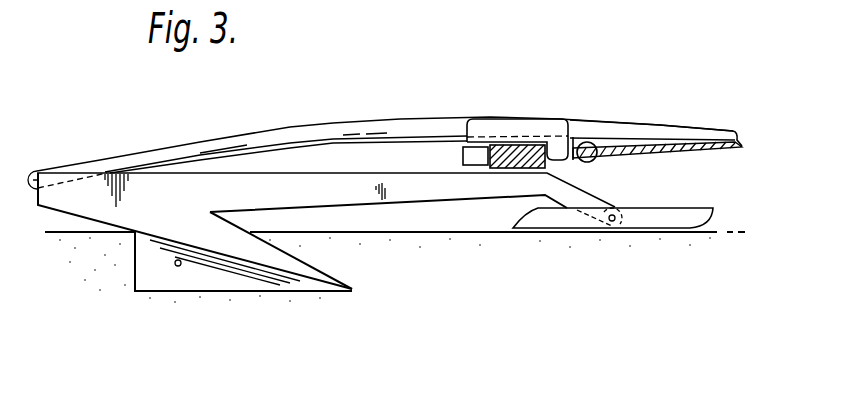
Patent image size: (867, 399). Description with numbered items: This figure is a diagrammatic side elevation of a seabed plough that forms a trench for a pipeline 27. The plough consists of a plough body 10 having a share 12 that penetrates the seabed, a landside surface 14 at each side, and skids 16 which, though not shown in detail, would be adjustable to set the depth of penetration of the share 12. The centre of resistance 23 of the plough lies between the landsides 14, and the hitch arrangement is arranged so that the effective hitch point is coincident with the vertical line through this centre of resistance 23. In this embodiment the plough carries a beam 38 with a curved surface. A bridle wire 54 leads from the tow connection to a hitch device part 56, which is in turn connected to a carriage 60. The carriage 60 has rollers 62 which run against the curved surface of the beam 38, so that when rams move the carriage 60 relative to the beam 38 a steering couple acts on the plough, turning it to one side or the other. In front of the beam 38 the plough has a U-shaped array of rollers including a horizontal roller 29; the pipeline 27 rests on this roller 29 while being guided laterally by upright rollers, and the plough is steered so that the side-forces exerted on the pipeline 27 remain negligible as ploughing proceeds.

The plough body 10 is at (288, 180).
The share 12 is at (317, 272).
The landside surface 14 is at (230, 280).
The skids 16 is at (642, 218).
The centre of resistance 23 is at (174, 267).
The pipeline 27 is at (693, 103).
The horizontal roller 29 is at (596, 148).
The beam 38 is at (513, 162).
The bridle wire 54 is at (653, 153).
The hitch device part 56 is at (560, 143).
The carriage 60 is at (528, 121).
The rollers 62 is at (462, 157).